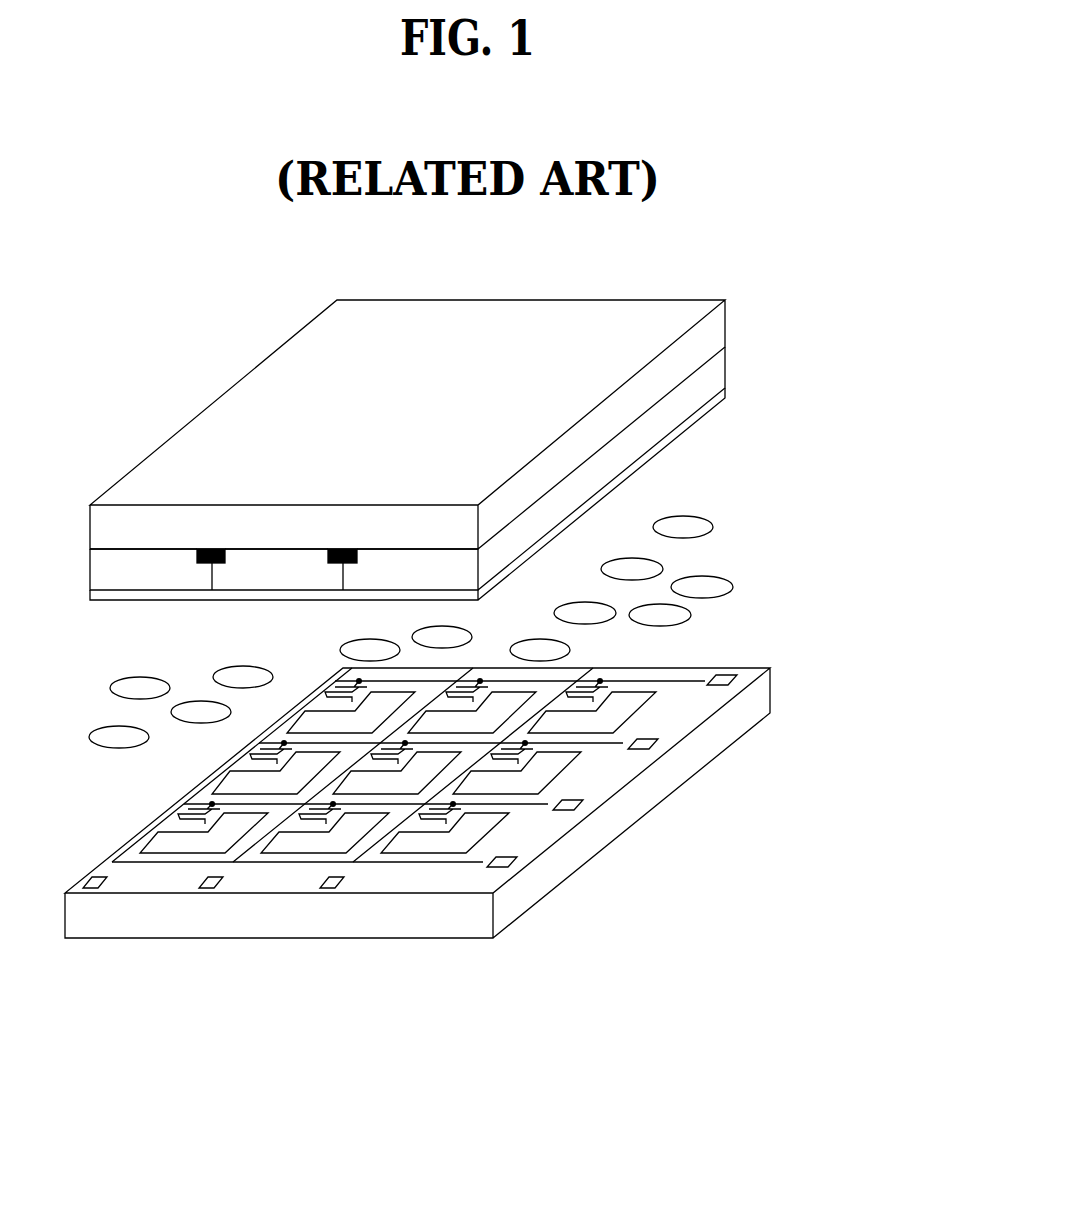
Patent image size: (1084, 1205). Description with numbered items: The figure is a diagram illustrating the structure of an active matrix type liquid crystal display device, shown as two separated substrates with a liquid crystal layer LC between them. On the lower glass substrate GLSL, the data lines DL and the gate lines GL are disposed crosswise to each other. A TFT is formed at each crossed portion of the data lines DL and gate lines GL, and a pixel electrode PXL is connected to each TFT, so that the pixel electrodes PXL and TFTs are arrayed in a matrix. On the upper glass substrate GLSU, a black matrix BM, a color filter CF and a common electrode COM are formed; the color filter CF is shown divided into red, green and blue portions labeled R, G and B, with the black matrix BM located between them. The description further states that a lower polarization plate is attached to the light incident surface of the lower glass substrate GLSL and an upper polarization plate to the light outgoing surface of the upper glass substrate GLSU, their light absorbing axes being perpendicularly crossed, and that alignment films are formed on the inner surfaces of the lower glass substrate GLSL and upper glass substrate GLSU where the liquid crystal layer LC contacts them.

The upper glass substrate GLSU is at (720, 330).
The color filter CF is at (722, 370).
The common electrode COM is at (722, 392).
The black matrix BM is at (207, 563).
The red color filter R is at (143, 569).
The green color filter G is at (276, 569).
The blue color filter B is at (417, 569).
The liquid crystal layer LC is at (703, 528).
The lower glass substrate GLSL is at (755, 698).
The gate line GL is at (278, 862).
The data line DL is at (352, 867).
The pixel electrode PXL is at (500, 823).
The element TFT is at (425, 828).